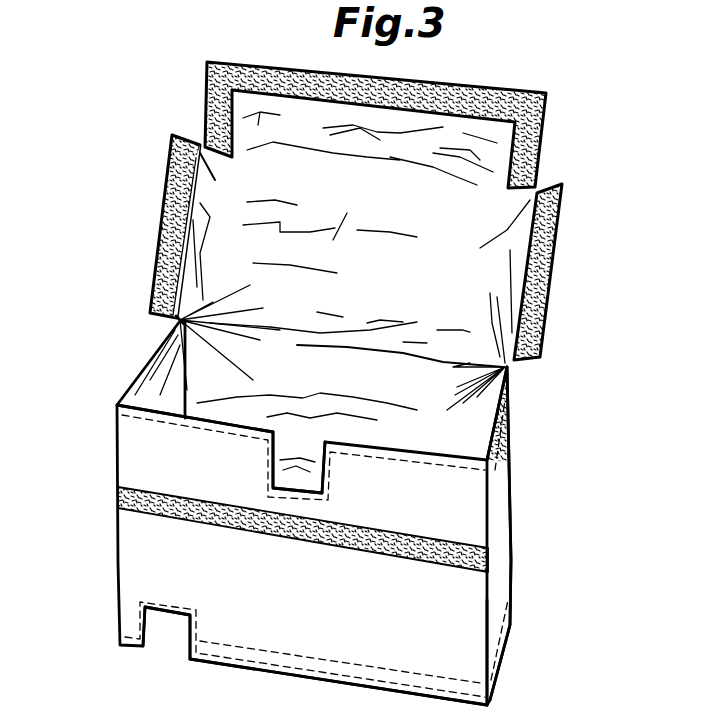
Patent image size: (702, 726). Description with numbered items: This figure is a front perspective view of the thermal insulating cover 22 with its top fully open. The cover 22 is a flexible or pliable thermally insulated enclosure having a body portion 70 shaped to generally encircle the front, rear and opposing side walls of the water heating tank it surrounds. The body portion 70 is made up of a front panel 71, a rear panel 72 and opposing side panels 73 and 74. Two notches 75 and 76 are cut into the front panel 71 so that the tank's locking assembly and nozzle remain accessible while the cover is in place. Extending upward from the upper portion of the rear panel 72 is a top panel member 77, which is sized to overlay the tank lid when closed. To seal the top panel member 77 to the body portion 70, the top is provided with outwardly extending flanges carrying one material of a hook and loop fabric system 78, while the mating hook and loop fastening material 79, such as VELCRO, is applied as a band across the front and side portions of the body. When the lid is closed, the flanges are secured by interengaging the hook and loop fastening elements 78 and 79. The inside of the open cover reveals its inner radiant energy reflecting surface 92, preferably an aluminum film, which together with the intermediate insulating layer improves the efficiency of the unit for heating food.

The thermal insulating cover 22 is at (112, 530).
The body portion 70 is at (262, 668).
The front panel 71 is at (463, 655).
The rear panel 72 is at (463, 390).
The side panel 73 is at (510, 542).
The side panel 74 is at (135, 400).
The notch 75 is at (320, 477).
The notch 76 is at (168, 637).
The top panel member 77 is at (493, 273).
The hook and loop fabric 78 is at (170, 190).
The hook and loop fastening material 79 is at (135, 490).
The inner radiant energy reflecting surface 92 is at (178, 322).